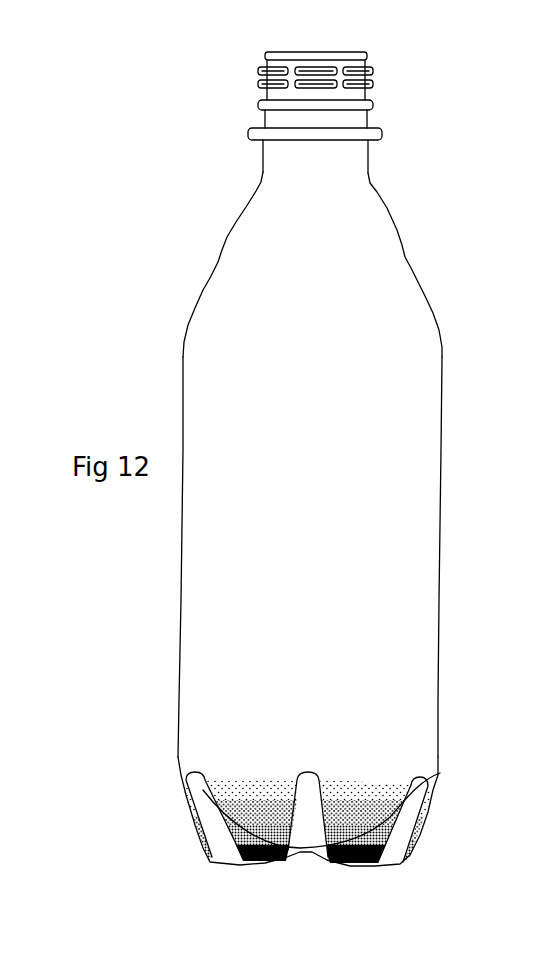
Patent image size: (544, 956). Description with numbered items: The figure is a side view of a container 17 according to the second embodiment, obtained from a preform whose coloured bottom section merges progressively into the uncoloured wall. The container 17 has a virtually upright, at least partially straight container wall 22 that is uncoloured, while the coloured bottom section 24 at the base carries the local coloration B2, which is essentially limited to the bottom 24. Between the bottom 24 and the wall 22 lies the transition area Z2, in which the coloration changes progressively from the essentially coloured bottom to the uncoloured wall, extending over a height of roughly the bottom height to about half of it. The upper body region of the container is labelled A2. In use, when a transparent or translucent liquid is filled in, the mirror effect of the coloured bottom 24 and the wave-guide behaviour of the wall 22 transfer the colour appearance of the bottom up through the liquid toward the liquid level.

The container 17 is at (205, 240).
The container wall 22 is at (440, 606).
The coloured bottom section 24 is at (207, 857).
The body zone of the container A2 is at (254, 557).
The local coloration B2 is at (407, 837).
The transition area Z2 is at (440, 773).